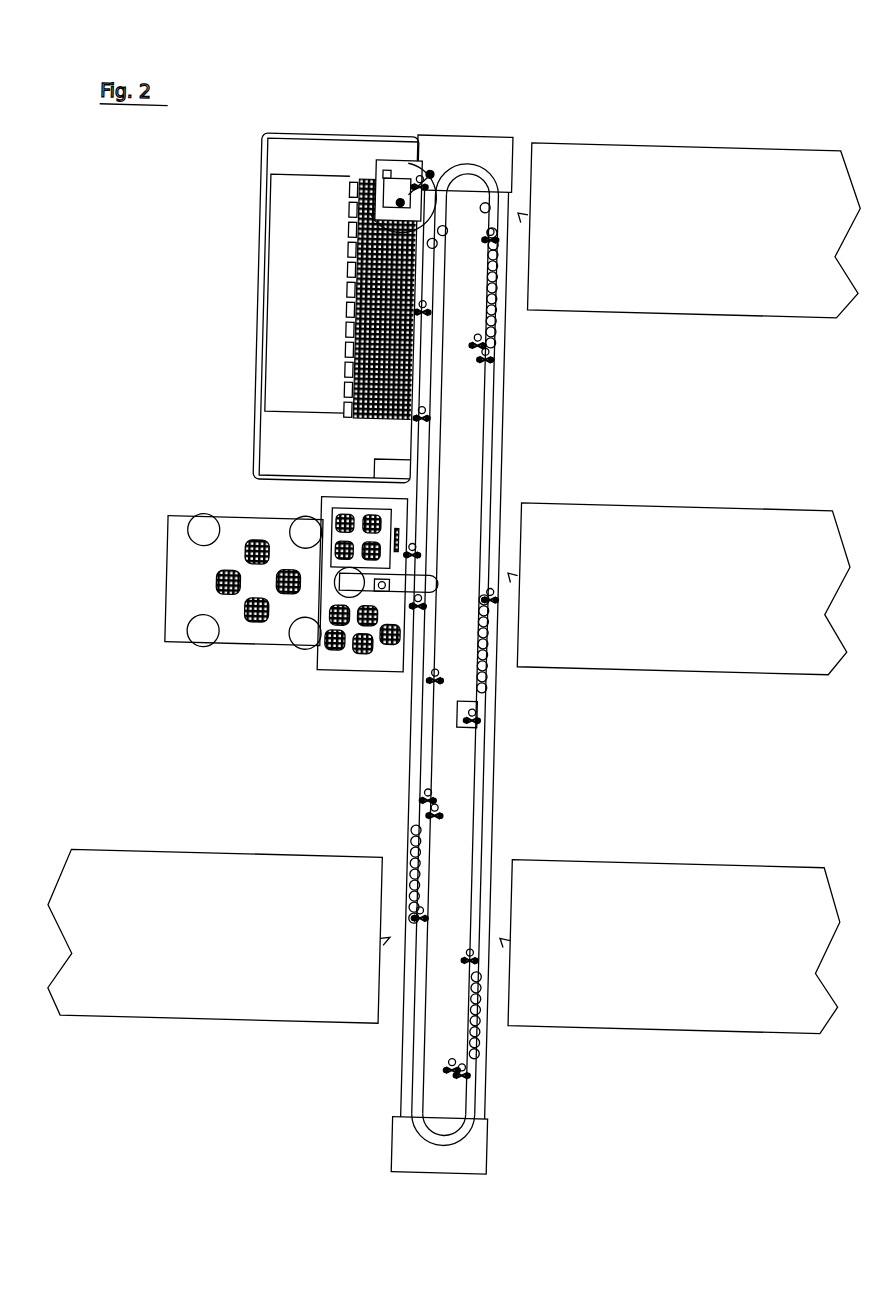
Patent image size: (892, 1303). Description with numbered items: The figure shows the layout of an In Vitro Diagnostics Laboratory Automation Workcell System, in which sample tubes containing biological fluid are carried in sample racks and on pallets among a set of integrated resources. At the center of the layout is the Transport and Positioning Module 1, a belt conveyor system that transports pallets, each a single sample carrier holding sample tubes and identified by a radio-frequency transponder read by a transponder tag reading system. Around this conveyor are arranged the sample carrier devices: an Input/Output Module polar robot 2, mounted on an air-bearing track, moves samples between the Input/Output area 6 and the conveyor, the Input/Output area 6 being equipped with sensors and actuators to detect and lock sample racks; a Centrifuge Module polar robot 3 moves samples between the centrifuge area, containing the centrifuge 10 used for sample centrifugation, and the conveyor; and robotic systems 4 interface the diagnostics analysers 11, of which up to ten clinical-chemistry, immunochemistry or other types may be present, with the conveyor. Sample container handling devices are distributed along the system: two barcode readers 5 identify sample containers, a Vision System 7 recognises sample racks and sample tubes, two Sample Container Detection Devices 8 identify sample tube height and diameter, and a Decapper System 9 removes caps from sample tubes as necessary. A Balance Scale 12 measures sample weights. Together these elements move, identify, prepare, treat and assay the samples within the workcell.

The Transport and Positioning Module 1 is at (503, 141).
The Input/Output Module polar robot 2 is at (393, 166).
The Centrifuge Module polar robot 3 is at (365, 649).
The robotic system 4 is at (520, 210).
The barcode reader 5 is at (452, 412).
The Input/Output area 6 is at (451, 452).
The Vision System 7 is at (408, 143).
The Sample Container Detection Device 8 is at (342, 404).
The Decapper System 9 is at (470, 699).
The centrifuge 10 is at (224, 581).
The Diagnostics Analyser 11 is at (668, 246).
The Balance Scale 12 is at (408, 508).